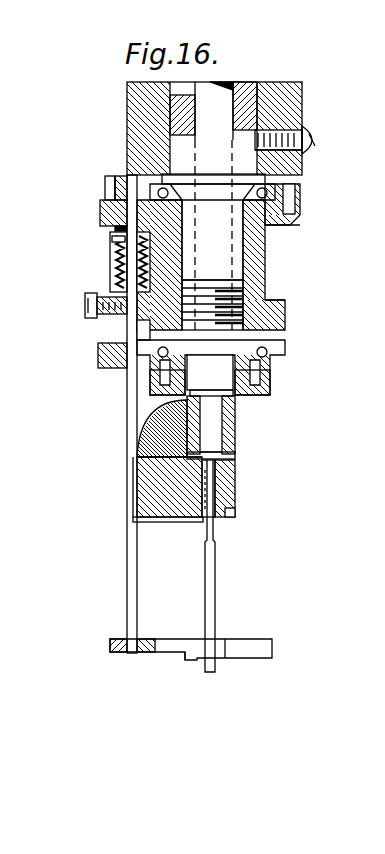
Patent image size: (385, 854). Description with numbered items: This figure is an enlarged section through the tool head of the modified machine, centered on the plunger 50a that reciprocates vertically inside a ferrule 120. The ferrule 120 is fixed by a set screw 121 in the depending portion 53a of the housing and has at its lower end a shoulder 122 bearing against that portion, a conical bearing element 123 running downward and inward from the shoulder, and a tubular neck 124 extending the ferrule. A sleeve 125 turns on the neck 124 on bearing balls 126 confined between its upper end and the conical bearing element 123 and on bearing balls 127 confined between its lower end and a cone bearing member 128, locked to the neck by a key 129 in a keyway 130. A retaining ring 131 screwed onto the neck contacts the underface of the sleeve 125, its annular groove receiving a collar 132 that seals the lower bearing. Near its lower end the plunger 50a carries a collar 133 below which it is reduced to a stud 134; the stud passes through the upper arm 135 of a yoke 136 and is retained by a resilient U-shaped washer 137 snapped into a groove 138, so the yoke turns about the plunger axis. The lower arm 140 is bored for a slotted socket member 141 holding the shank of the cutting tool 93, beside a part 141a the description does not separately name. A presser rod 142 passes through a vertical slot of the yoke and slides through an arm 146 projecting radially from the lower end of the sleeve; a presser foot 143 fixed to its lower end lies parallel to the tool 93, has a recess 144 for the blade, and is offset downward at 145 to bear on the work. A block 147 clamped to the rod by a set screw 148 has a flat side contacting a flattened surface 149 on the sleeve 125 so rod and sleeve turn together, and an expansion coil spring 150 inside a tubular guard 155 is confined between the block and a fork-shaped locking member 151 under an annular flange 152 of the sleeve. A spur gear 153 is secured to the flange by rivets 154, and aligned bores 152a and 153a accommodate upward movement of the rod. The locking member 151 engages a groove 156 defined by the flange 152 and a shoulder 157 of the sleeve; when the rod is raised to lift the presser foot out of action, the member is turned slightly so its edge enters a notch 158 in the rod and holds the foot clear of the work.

The plunger 50a is at (218, 100).
The depending portion of housing 53a is at (300, 88).
The cutting tool 93 is at (218, 577).
The ferrule 120 is at (255, 115).
The set screw 121 is at (305, 130).
The shoulder 122 is at (262, 155).
The conical bearing element 123 is at (262, 180).
The tubular neck 124 is at (248, 292).
The sleeve 125 is at (266, 256).
The bearing balls 126 is at (280, 186).
The bearing balls 127 is at (283, 320).
The cone bearing member 128 is at (286, 352).
The key 129 is at (185, 392).
The keyway 130 is at (187, 398).
The retaining ring 131 is at (262, 380).
The collar 132 is at (140, 365).
The collar 133 is at (236, 400).
The stud 134 is at (236, 466).
The upper arm of yoke 135 is at (178, 418).
The yoke 136 is at (150, 524).
The washer 137 is at (175, 462).
The groove 138 is at (202, 470).
The lower arm of yoke 140 is at (237, 496).
The slotted socket member 141 is at (200, 519).
The bushing flange 141a is at (238, 511).
The presser rod 142 is at (126, 587).
The presser foot 143 is at (165, 643).
The recess 144 is at (220, 647).
The downward offset 145 is at (191, 662).
The arm 146 is at (98, 358).
The block 147 is at (112, 298).
The set screw 148 is at (85, 304).
The flattened surface 149 is at (137, 330).
The expansion coil spring 150 is at (116, 240).
The locking member 151 is at (116, 228).
The annular flange 152 is at (100, 212).
The bore 152a is at (104, 200).
The spur gear 153 is at (112, 178).
The bore 153a is at (124, 178).
The rivets 154 is at (298, 200).
The tubular guard 155 is at (110, 270).
The groove 156 is at (292, 217).
The shoulder 157 is at (305, 232).
The notch 158 is at (114, 247).